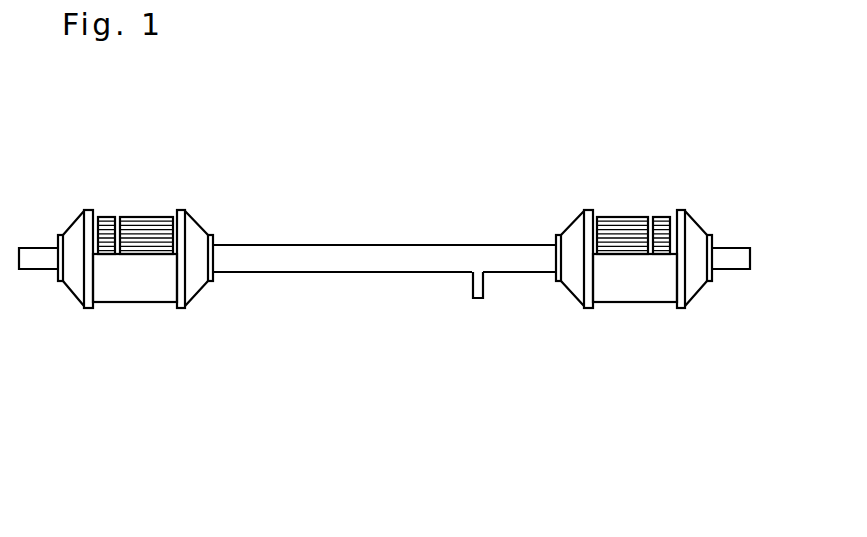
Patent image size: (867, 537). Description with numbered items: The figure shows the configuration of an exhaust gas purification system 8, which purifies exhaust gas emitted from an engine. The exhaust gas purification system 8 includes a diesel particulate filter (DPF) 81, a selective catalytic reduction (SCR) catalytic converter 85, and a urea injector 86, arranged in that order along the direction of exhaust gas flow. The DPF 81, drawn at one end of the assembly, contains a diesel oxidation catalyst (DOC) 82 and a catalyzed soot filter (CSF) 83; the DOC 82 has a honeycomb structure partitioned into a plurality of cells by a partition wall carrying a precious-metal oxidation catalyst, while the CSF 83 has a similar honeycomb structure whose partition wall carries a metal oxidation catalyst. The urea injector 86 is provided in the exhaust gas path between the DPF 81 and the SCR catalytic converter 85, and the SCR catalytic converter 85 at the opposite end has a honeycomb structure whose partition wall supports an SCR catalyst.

The exhaust gas purification system 8 is at (282, 163).
The diesel particulate filter (DPF) 81 is at (151, 374).
The diesel oxidation catalyst (DOC) 82 is at (102, 246).
The catalyzed soot filter (CSF) 83 is at (148, 246).
The selective catalytic reduction (SCR) catalytic converter 85 is at (630, 317).
The urea injector 86 is at (473, 283).